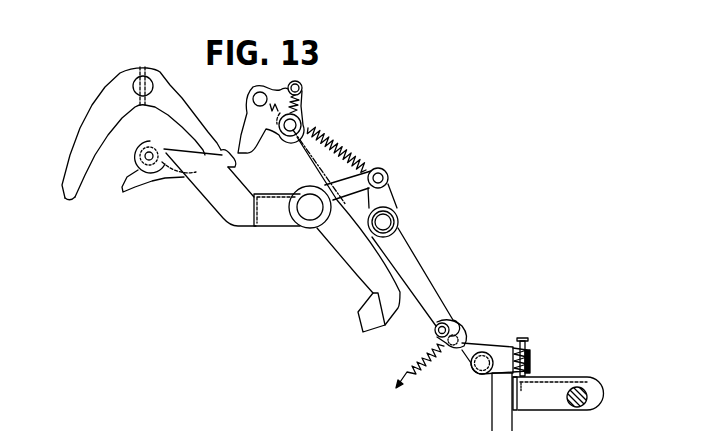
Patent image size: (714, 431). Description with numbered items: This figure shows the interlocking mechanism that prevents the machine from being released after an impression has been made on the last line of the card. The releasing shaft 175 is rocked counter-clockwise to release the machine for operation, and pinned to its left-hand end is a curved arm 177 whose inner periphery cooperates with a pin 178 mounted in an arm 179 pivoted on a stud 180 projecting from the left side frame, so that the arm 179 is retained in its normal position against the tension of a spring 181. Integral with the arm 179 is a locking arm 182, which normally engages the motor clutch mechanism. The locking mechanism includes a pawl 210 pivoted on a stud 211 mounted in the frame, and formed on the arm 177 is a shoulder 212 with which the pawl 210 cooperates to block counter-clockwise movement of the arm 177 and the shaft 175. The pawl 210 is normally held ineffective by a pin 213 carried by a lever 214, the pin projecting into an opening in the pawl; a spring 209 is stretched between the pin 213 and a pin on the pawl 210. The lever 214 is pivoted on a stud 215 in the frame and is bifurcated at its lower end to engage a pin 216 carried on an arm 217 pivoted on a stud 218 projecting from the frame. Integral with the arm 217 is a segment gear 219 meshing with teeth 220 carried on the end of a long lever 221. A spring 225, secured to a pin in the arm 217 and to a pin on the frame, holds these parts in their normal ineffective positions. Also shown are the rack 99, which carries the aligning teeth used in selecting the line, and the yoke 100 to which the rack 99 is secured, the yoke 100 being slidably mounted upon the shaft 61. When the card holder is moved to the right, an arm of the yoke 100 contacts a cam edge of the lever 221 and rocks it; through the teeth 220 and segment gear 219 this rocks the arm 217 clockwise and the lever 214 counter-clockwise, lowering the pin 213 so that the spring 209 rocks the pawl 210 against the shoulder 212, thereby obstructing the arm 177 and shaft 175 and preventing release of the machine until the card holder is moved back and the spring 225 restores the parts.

The releasing shaft 175 is at (135, 88).
The curved arm 177 is at (172, 110).
The pin 178 is at (140, 150).
The arm 179 is at (207, 202).
The stud 180 is at (300, 210).
The spring 181 is at (333, 140).
The locking arm 182 is at (352, 258).
The spring 209 is at (301, 100).
The pawl 210 is at (253, 117).
The stud 211 is at (253, 97).
The shoulder 212 is at (223, 155).
The pin 213 is at (301, 123).
The lever 214 is at (375, 200).
The stud 215 is at (392, 221).
The pin 216 is at (462, 333).
The arm 217 is at (468, 356).
The stud 218 is at (477, 373).
The segment gear 219 is at (498, 346).
The teeth 220 is at (527, 342).
The long lever 221 is at (530, 353).
The spring 225 is at (413, 365).
The shaft 61 is at (587, 399).
The rack 99 is at (517, 410).
The yoke 100 is at (555, 410).